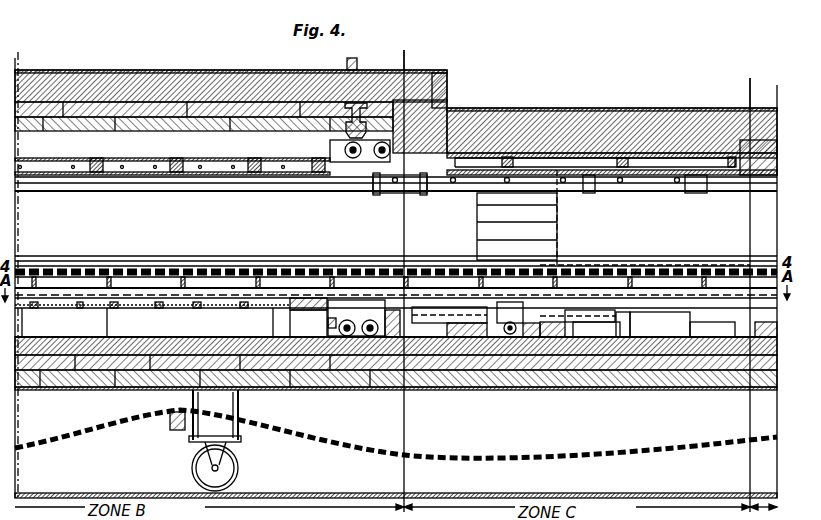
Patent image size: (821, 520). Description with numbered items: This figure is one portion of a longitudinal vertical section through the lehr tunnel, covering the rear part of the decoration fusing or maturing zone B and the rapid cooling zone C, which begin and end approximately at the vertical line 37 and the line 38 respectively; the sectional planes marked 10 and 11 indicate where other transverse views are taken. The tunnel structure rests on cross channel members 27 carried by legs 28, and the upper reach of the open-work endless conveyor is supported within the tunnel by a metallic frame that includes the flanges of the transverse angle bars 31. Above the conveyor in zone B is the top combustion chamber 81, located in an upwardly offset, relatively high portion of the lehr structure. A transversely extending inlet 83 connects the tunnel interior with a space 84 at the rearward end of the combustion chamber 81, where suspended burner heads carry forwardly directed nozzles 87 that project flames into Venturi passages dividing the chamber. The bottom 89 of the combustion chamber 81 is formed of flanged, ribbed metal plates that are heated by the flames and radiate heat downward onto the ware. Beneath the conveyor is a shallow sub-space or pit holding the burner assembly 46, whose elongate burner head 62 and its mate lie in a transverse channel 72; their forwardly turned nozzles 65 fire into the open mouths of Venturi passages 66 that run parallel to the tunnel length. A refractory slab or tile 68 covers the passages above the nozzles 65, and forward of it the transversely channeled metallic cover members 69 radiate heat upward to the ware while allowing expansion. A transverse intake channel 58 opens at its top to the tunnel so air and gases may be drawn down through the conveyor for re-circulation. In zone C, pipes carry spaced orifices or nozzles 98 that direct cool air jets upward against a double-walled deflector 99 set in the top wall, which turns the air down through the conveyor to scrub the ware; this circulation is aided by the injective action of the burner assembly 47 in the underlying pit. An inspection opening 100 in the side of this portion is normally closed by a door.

The section line 10 is at (18, 50).
The section line 11 is at (355, 48).
The top combustion chamber 81 is at (72, 128).
The vertical line 37 is at (404, 62).
The space 84 is at (370, 137).
The inlet 83 is at (398, 137).
The deflector 99 is at (597, 153).
The line 38 is at (750, 80).
The nozzles 87 is at (328, 143).
The bottom 89 is at (128, 172).
The orifices or nozzles 98 is at (507, 183).
The inspection opening 100 is at (545, 232).
The transverse angle bars 31 is at (105, 270).
The metallic cover members 69 is at (50, 309).
The transverse channel 72 is at (328, 317).
The burner head 62 is at (345, 313).
The burner assembly 46 is at (360, 317).
The refractory slab or tile 68 is at (283, 298).
The transverse intake channel 58 is at (515, 302).
The Venturi passages 66 is at (163, 340).
The nozzles 65 is at (320, 340).
The burner assembly 47 is at (484, 390).
The cross channel members 27 is at (232, 397).
The legs 28 is at (188, 428).